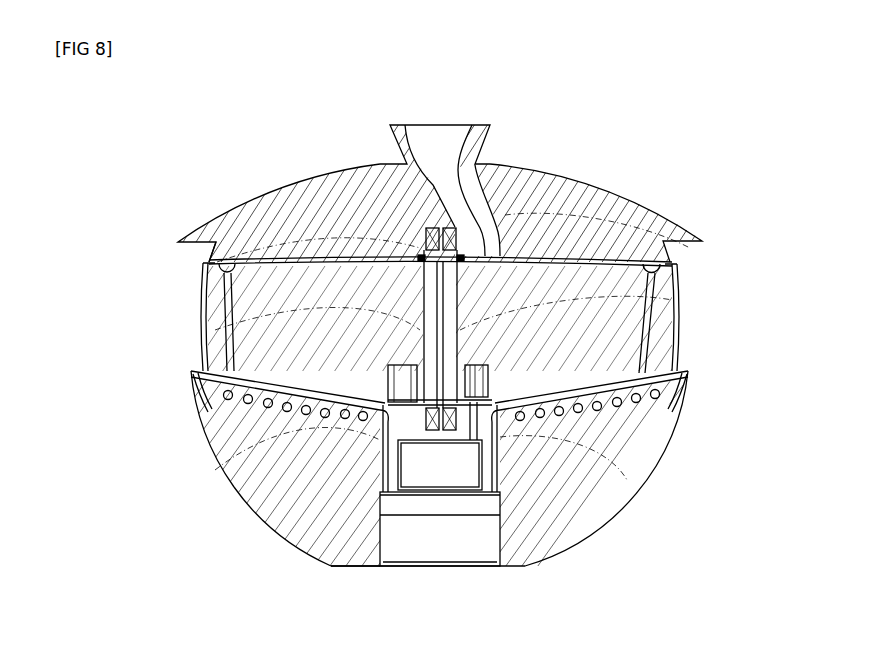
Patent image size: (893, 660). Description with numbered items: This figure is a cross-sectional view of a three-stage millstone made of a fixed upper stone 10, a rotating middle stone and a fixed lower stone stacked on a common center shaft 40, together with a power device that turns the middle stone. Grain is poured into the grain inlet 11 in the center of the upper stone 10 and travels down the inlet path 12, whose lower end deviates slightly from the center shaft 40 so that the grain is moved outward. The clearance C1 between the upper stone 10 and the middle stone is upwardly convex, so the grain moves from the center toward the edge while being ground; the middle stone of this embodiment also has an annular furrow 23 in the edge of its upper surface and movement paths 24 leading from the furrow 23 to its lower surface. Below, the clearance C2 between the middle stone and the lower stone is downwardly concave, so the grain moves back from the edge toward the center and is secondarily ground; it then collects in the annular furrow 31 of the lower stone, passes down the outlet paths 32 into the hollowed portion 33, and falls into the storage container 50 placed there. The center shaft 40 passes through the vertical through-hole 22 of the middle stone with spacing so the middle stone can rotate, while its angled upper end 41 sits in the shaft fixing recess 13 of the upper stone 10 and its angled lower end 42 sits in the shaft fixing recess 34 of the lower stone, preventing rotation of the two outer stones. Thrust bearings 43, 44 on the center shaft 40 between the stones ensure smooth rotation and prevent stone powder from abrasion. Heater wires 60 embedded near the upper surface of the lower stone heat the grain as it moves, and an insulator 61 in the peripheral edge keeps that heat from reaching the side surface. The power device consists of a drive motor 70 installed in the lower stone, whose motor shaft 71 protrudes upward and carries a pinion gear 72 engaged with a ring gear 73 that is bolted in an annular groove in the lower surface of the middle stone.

The upper stone 10 is at (257, 176).
The grain inlet 11 is at (447, 134).
The inlet path 12 is at (535, 200).
The shaft fixing recess 13 is at (424, 250).
The upper end 41 is at (503, 200).
The vertical through-hole 22 is at (681, 272).
The annular furrow 23 is at (228, 260).
The thrust bearing 43 is at (218, 268).
The thrust bearing 44 is at (215, 352).
The movement paths 24 is at (205, 340).
The center shaft 40 is at (645, 352).
The insulator 61 is at (195, 390).
The ring gear 73 is at (690, 386).
The pinion gear 72 is at (620, 445).
The lower end 42 is at (585, 483).
The motor shaft 71 is at (590, 500).
The heater wires 60 is at (250, 412).
The clearance C1 is at (232, 255).
The clearance C2 is at (240, 385).
The annular furrow 31 is at (270, 506).
The outlet paths 32 is at (305, 535).
The hollowed portion 33 is at (340, 570).
The shaft fixing recess 34 is at (422, 505).
The drive motor 70 is at (462, 540).
The storage container 50 is at (475, 465).